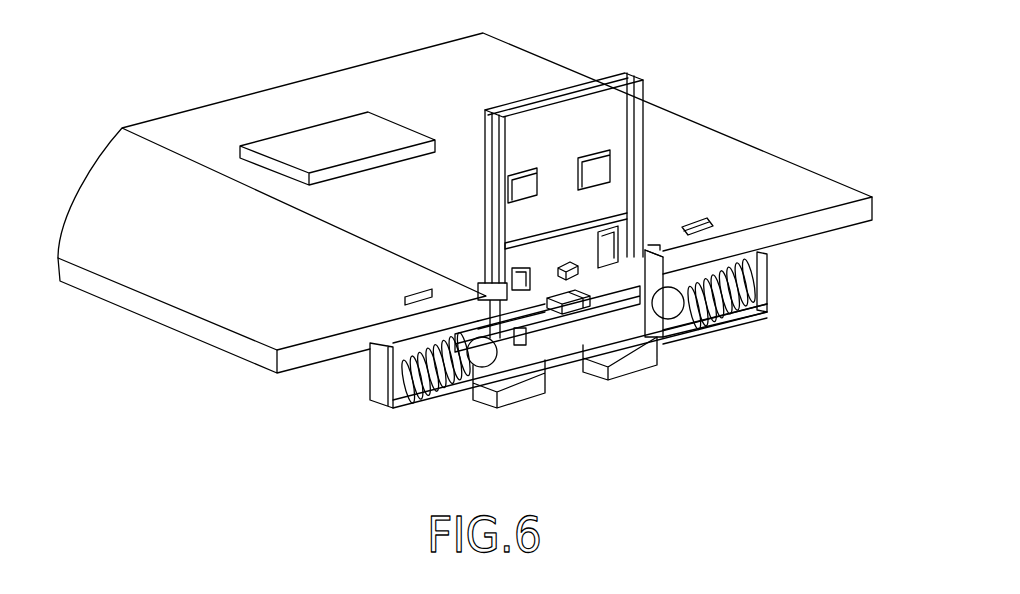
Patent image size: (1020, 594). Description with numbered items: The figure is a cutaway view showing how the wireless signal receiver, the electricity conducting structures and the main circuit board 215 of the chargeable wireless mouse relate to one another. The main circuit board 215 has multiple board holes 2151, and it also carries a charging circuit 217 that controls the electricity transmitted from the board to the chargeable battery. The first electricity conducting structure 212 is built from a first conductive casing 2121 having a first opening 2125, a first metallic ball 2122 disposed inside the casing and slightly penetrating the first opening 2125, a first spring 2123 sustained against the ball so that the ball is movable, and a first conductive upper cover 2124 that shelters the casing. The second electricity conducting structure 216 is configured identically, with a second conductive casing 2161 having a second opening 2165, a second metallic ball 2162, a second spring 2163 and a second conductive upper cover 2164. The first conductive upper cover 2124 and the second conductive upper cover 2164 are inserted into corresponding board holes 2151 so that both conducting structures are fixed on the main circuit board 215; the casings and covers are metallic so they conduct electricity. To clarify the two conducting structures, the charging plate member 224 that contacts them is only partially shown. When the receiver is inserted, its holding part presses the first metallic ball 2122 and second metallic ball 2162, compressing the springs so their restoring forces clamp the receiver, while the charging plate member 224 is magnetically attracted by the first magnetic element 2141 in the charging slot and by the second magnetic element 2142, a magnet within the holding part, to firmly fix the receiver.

The main circuit board 215 is at (433, 68).
The charging circuit 217 is at (315, 147).
The board holes 2151 is at (404, 304).
The first electricity conducting structure 212 is at (522, 283).
The first conductive casing 2121 is at (410, 402).
The first metallic ball 2122 is at (520, 338).
The first spring 2123 is at (460, 378).
The first conductive upper cover 2124 is at (370, 397).
The first opening 2125 is at (547, 383).
The first magnetic element 2141 is at (513, 390).
The second magnetic element 2142 is at (560, 290).
The charging plate member 224 is at (478, 340).
The second electricity conducting structure 216 is at (775, 272).
The second conductive casing 2161 is at (753, 313).
The second metallic ball 2162 is at (668, 248).
The second spring 2163 is at (737, 263).
The second conductive upper cover 2164 is at (767, 302).
The second opening 2165 is at (697, 330).